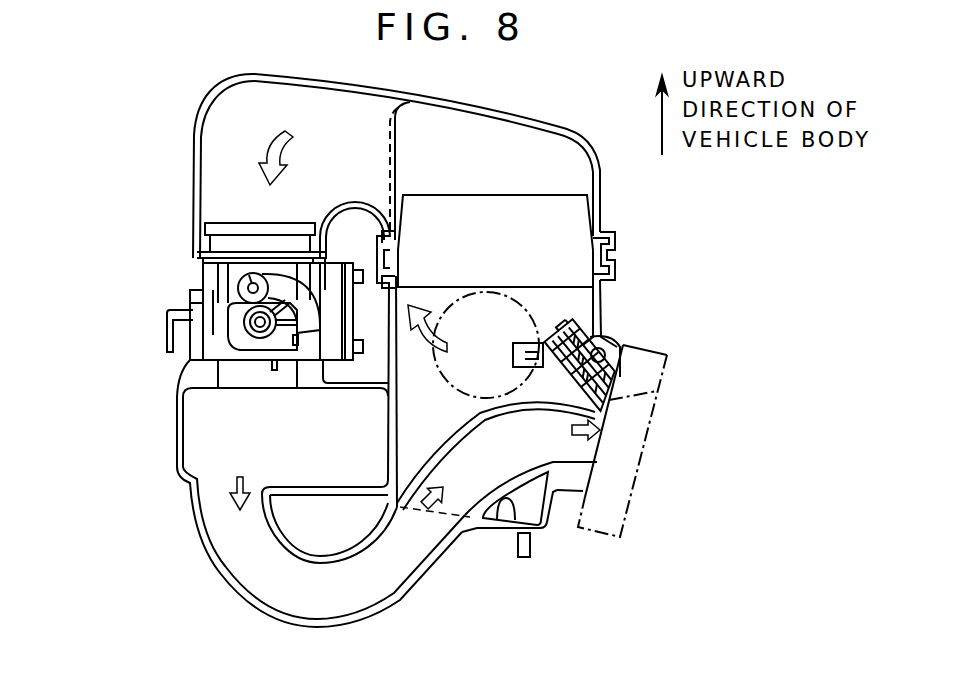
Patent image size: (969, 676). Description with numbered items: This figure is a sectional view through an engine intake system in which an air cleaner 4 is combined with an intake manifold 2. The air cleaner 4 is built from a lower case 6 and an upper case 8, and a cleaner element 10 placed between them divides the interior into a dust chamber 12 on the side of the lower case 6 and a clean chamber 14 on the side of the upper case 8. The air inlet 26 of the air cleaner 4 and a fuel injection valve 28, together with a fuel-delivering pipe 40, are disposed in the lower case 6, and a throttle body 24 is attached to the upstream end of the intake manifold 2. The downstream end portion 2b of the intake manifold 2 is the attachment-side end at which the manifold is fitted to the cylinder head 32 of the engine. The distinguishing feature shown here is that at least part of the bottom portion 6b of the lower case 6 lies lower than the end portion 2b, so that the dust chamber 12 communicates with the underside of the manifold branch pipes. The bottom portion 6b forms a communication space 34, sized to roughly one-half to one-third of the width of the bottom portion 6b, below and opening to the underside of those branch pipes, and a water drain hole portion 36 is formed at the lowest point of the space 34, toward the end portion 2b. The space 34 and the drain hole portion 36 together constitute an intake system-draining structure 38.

The intake manifold 2 is at (412, 598).
The end portion 2b is at (577, 482).
The air cleaner 4 is at (605, 215).
The lower case 6 is at (600, 292).
The bottom portion 6b is at (510, 517).
The upper case 8 is at (560, 128).
The cleaner element 10 is at (566, 210).
The dust chamber 12 is at (613, 330).
The clean chamber 14 is at (518, 148).
The throttle body 24 is at (203, 300).
The air inlet 26 is at (487, 307).
The fuel injection valve 28 is at (618, 343).
The cylinder head 32 is at (643, 397).
The communication space 34 is at (537, 503).
The water drain hole portion 36 is at (528, 558).
The intake system-draining structure 38 is at (559, 518).
The fuel-delivering pipe 40 is at (614, 378).